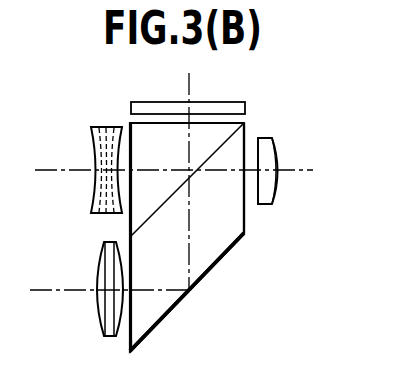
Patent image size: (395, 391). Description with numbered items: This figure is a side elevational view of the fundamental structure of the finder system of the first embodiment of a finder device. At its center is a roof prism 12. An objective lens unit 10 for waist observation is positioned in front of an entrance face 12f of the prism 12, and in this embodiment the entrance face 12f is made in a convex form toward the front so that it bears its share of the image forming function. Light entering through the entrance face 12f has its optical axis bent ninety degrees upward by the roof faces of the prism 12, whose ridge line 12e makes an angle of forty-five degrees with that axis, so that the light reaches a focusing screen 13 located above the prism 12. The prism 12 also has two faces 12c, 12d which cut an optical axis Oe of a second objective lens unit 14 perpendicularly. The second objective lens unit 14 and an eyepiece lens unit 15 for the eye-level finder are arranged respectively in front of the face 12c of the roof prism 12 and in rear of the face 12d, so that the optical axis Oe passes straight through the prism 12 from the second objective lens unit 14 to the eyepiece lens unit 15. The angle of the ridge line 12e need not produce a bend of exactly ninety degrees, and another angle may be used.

The objective lens unit 10 is at (104, 338).
The prism 12 is at (162, 310).
The face of prism 12c is at (129, 126).
The face of prism 12d is at (248, 136).
The ridge line of the roofs 12e is at (183, 298).
The entrance face of prism 12f is at (127, 352).
The focusing screen 13 is at (227, 101).
The second objective lens unit 14 is at (100, 215).
The eyepiece lens unit 15 is at (265, 206).
The optical axis of the second objective lens unit Oe is at (43, 168).